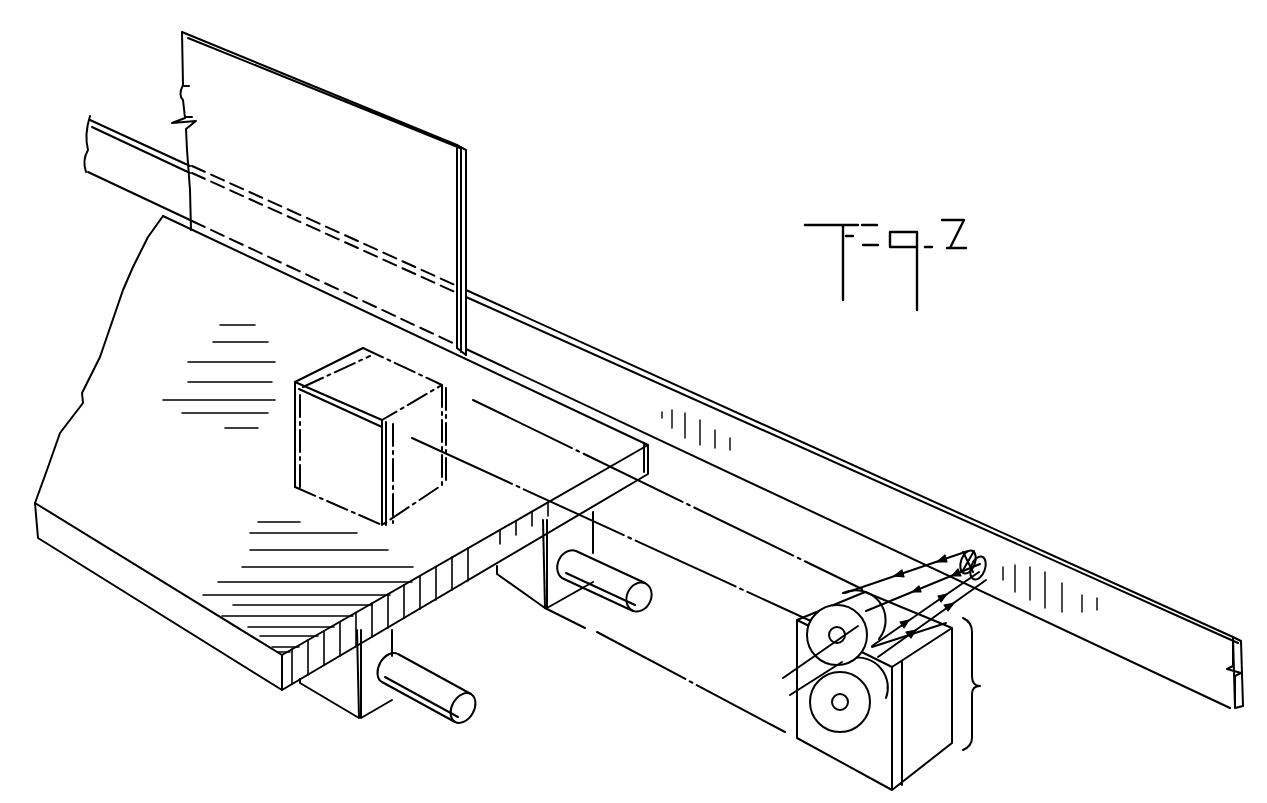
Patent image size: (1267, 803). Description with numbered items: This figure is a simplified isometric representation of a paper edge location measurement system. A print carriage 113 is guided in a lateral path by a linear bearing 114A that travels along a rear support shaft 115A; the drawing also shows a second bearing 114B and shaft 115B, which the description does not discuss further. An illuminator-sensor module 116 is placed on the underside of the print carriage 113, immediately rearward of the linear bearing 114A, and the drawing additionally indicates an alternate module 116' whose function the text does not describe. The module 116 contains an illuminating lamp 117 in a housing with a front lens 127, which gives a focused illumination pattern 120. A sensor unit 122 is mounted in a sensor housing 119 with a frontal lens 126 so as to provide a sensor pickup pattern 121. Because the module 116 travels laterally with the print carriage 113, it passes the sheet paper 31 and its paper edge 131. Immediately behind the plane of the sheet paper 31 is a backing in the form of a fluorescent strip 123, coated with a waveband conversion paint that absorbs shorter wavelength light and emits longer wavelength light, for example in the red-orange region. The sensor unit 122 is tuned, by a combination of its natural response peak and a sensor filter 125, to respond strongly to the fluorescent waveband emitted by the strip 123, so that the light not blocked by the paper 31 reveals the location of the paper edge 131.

The sheet paper 31 is at (415, 147).
The paper edge 131 is at (466, 222).
The print carriage 113 is at (175, 568).
The linear bearing 114A is at (530, 583).
The mounting plate 114B is at (338, 698).
The rear support shaft 115A is at (602, 611).
The pin 115B is at (432, 714).
The illuminator-sensor module 116 is at (907, 691).
The drive unit (alternate position) 116' is at (334, 436).
The illuminating lamp 117 is at (838, 705).
The sensor housing 119 is at (815, 633).
The illumination pattern 120 is at (985, 572).
The sensor pickup pattern 121 is at (972, 549).
The sensor unit 122 is at (799, 662).
The fluorescent strip 123 is at (1115, 603).
The sensor filter 125 is at (797, 690).
The frontal lens 126 is at (848, 597).
The front lens 127 is at (868, 678).